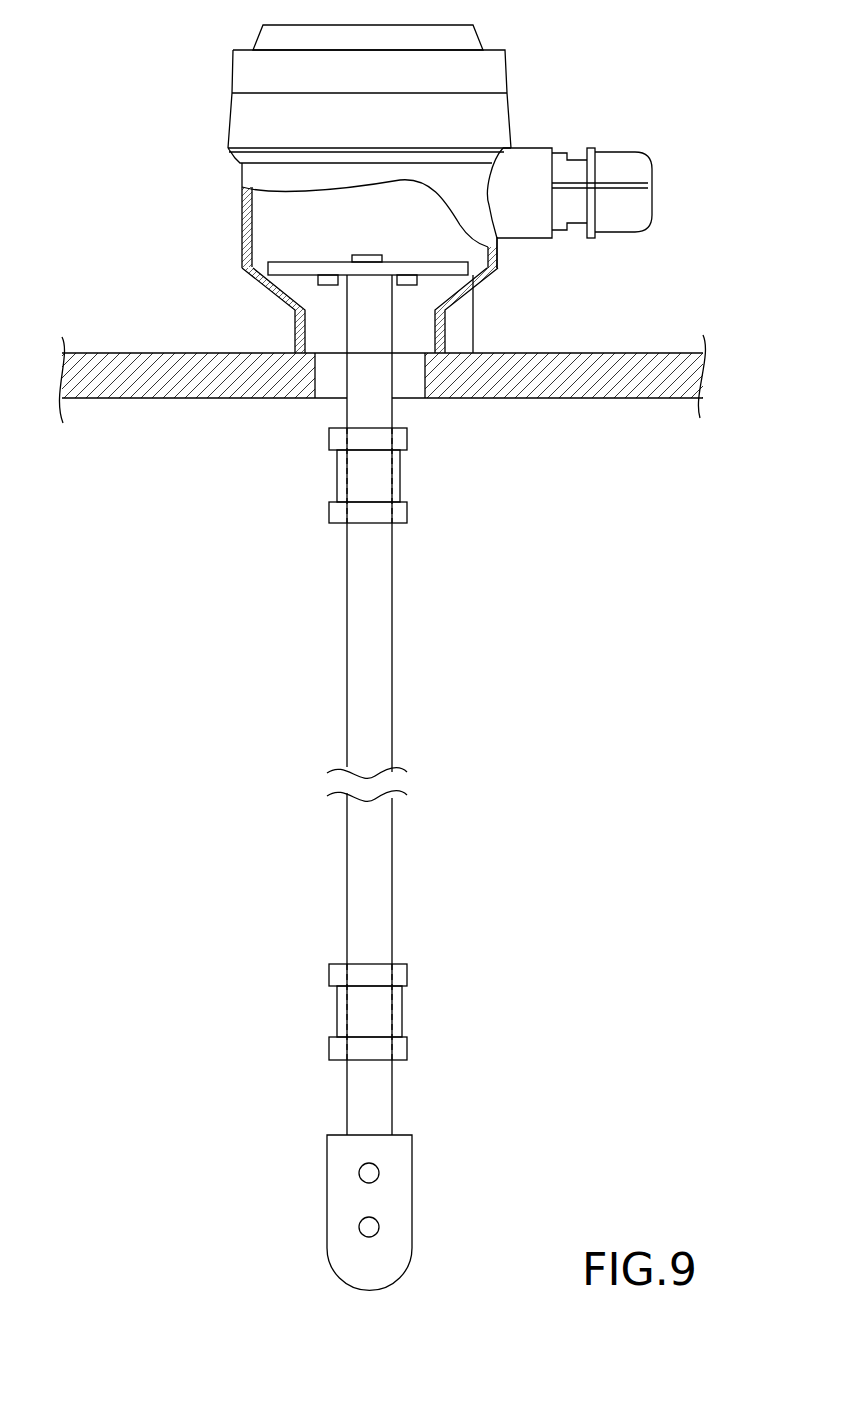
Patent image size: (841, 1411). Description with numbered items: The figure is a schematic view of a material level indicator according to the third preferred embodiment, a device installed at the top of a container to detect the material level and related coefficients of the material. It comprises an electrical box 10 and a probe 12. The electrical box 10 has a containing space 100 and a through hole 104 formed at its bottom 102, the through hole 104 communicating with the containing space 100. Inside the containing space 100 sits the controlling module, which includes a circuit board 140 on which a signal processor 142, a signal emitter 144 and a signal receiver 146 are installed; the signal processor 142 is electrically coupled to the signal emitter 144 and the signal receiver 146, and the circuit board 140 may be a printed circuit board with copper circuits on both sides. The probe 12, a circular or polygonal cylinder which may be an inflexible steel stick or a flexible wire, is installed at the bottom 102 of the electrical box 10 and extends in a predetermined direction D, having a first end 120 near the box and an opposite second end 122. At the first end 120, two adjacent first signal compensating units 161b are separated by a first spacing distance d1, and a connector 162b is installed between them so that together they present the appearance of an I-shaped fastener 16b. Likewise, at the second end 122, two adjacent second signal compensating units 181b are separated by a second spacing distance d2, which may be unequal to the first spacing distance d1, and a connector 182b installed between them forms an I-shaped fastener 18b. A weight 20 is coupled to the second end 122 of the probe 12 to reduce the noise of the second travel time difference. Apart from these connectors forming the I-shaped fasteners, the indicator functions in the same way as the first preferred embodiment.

The electrical box 10 is at (512, 76).
The probe 12 is at (396, 677).
The weight 20 is at (338, 1205).
The containing space 100 is at (270, 206).
The bottom 102 is at (302, 333).
The through hole 104 is at (330, 357).
The circuit board 140 is at (282, 269).
The signal processor 142 is at (363, 256).
The signal emitter 144 is at (420, 280).
The signal receiver 146 is at (317, 281).
The I-shaped fastener 16b is at (261, 498).
The first signal compensating unit 161b is at (330, 435).
The connector 162b is at (342, 478).
The first end 120 is at (334, 488).
The first spacing distance d1 is at (420, 428).
The I-shaped fastener 18b is at (259, 1040).
The second signal compensating unit 181b is at (330, 972).
The connector 182b is at (340, 1012).
The second end 122 is at (338, 1027).
The second spacing distance d2 is at (413, 964).
The predetermined direction D is at (305, 602).